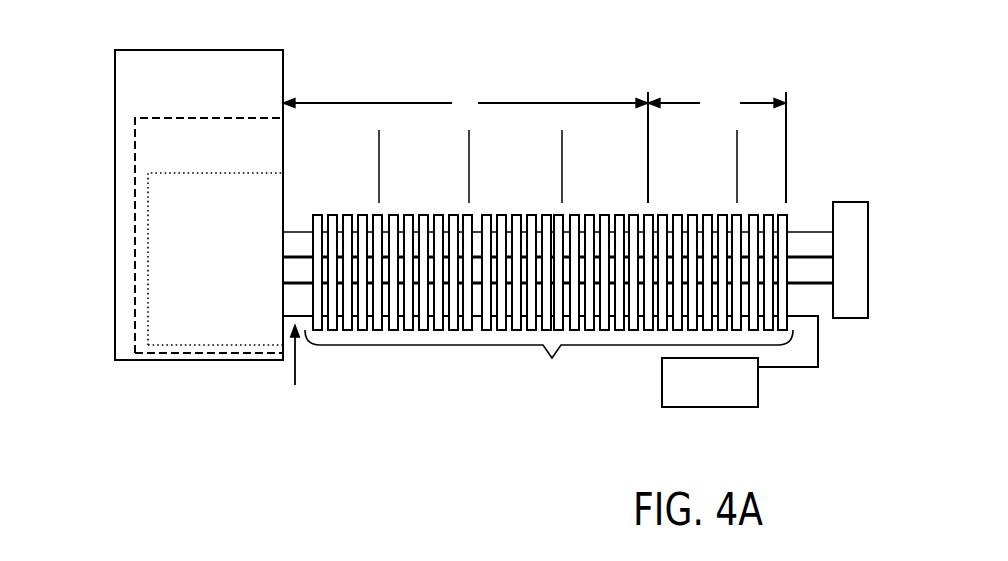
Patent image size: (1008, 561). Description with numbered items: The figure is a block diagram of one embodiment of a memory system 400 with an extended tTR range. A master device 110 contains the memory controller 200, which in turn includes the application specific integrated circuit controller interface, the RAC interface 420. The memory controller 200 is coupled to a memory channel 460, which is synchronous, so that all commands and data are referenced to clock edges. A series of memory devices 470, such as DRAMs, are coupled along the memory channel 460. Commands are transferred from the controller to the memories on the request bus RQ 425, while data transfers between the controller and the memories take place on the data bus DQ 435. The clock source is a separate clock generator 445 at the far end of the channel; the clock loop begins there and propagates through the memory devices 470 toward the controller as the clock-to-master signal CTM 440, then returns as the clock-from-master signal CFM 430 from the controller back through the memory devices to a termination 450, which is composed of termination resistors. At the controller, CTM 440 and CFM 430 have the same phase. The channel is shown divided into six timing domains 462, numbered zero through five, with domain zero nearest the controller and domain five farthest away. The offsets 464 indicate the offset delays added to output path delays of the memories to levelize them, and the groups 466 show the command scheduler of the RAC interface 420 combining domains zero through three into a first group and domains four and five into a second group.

The memory system 400 is at (786, 60).
The master device 110 is at (115, 72).
The memory controller 200 is at (135, 147).
The RAC interface 420 is at (148, 224).
The clock-from-master (CFM) 430 is at (515, 230).
The request bus (RQ) 425 is at (498, 255).
The data bus (DQ) 435 is at (491, 280).
The clock-to-master (CTM) 440 is at (507, 329).
The memory channel 460 is at (292, 393).
The memory devices 470 is at (549, 327).
The termination 450 is at (850, 318).
The clock generator 445 is at (680, 407).
The group 466 is at (599, 146).
The offset 464 is at (622, 141).
The timing domains 462 is at (626, 166).